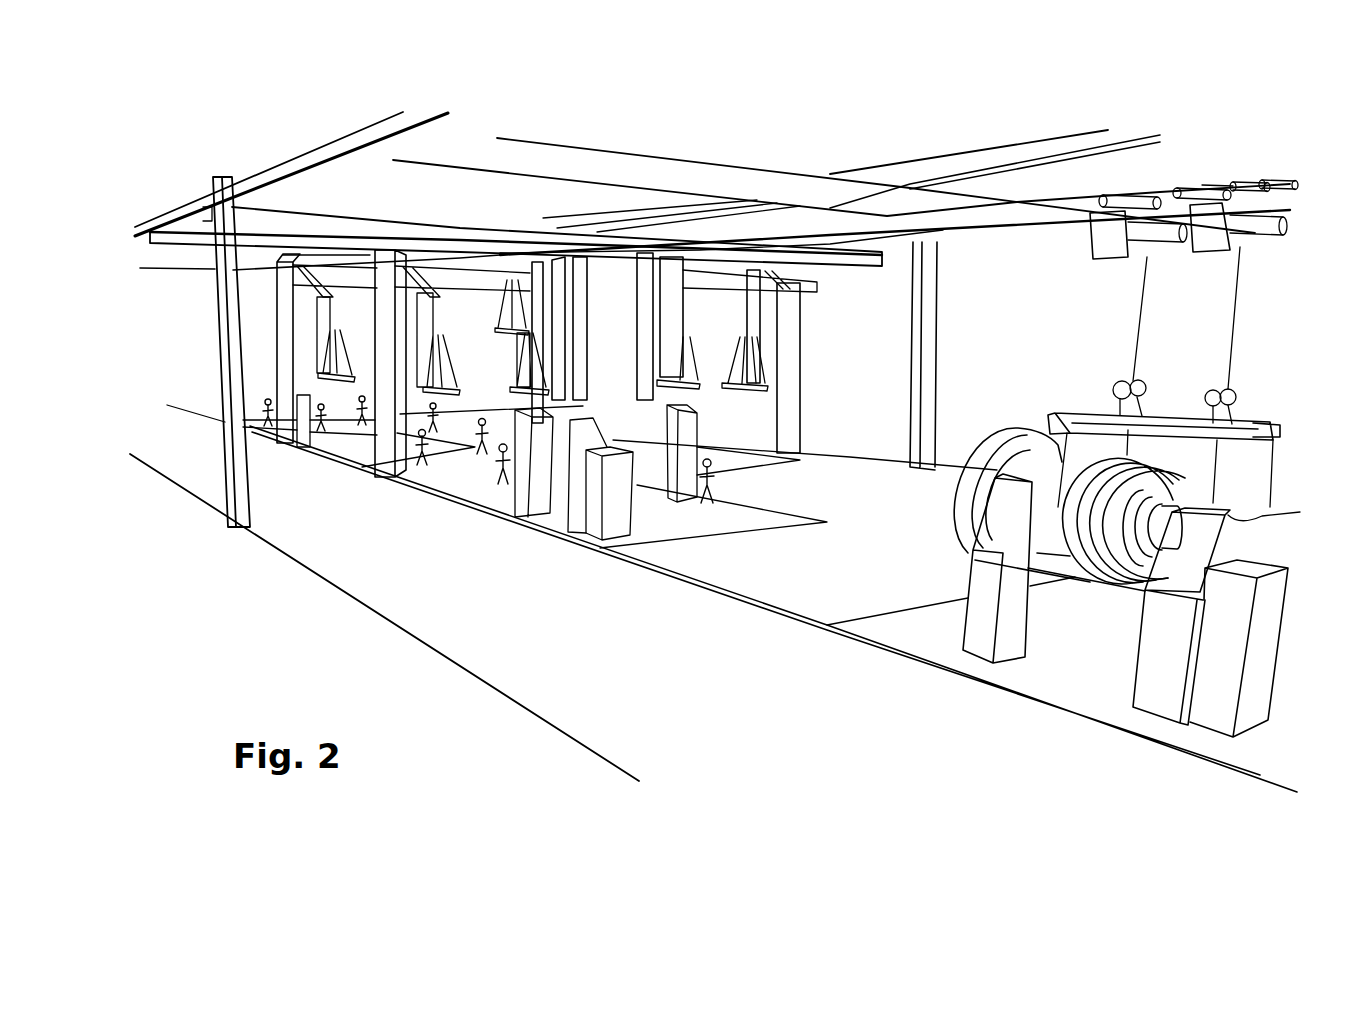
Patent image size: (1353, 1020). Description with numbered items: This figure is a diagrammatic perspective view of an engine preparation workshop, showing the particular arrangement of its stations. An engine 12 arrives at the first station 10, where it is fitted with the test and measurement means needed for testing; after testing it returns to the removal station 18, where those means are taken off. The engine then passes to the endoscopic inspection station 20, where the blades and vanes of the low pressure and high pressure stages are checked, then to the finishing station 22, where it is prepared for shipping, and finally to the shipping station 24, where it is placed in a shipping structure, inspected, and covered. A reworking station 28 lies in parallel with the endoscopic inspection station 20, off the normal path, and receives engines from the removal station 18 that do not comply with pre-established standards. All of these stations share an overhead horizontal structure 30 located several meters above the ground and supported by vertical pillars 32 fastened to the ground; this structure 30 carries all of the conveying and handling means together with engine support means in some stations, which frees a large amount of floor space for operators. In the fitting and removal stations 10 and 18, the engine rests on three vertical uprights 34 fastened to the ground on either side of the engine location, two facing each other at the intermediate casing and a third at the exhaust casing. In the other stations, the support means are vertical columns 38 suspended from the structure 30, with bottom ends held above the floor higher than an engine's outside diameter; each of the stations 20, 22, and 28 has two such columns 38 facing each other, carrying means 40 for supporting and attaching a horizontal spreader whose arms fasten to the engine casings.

The first station 10 is at (1063, 673).
The engine 12 is at (1127, 385).
The removal station 18 is at (658, 514).
The endoscopic inspection station 20 is at (463, 474).
The finishing station 22 is at (356, 440).
The shipping station 24 is at (253, 406).
The reworking station 28 is at (740, 448).
The overhead horizontal structure 30 is at (262, 156).
The vertical pillars 32 is at (232, 320).
The vertical uprights 34 is at (970, 632).
The vertical columns 38 is at (330, 323).
The means for supporting and attaching a horizontal spreader 40 is at (567, 393).